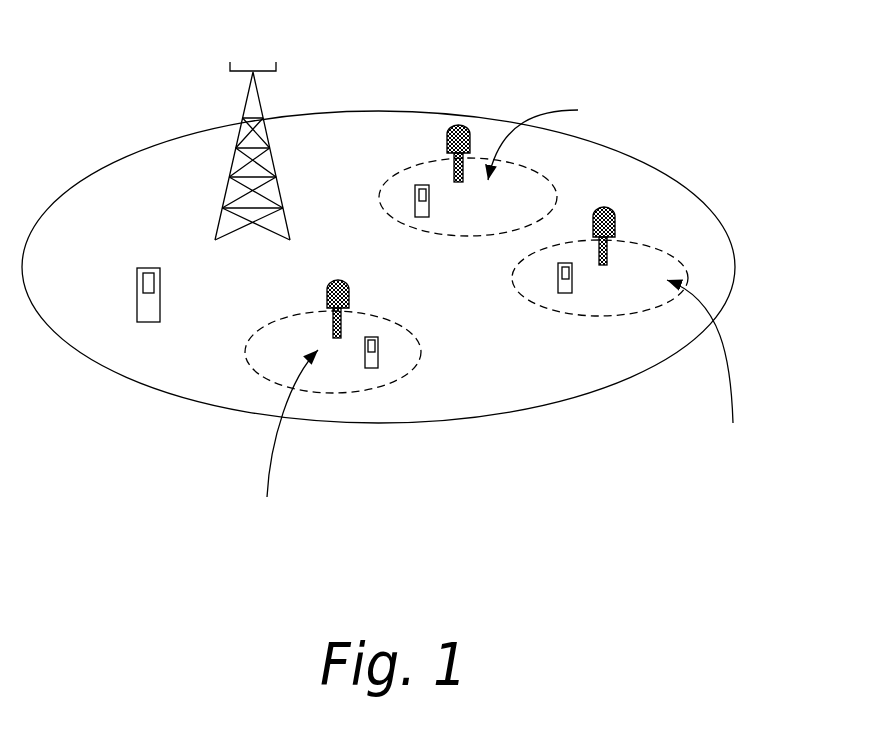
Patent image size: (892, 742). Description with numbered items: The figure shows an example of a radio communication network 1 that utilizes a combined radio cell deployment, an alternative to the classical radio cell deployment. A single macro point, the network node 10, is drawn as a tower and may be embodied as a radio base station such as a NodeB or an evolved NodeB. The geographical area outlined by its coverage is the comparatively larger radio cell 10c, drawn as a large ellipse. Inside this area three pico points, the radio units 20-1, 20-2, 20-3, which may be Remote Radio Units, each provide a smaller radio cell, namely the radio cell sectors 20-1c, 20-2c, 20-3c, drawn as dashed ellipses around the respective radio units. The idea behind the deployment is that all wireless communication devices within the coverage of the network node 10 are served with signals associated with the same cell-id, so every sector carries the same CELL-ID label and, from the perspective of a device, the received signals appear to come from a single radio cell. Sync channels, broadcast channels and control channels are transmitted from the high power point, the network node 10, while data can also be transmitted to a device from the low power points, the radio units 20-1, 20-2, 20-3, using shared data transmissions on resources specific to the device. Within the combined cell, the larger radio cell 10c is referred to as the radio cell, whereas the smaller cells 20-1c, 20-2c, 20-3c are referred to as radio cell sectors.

The radio communication network 1 is at (564, 34).
The network node 10 is at (262, 71).
The radio cell 10c is at (378, 267).
The radio unit 20-1 is at (449, 124).
The radio unit 20-2 is at (338, 280).
The radio unit 20-3 is at (599, 207).
The radio cell sector 20-1c is at (468, 197).
The radio cell sector 20-2c is at (333, 352).
The radio cell sector 20-3c is at (600, 278).